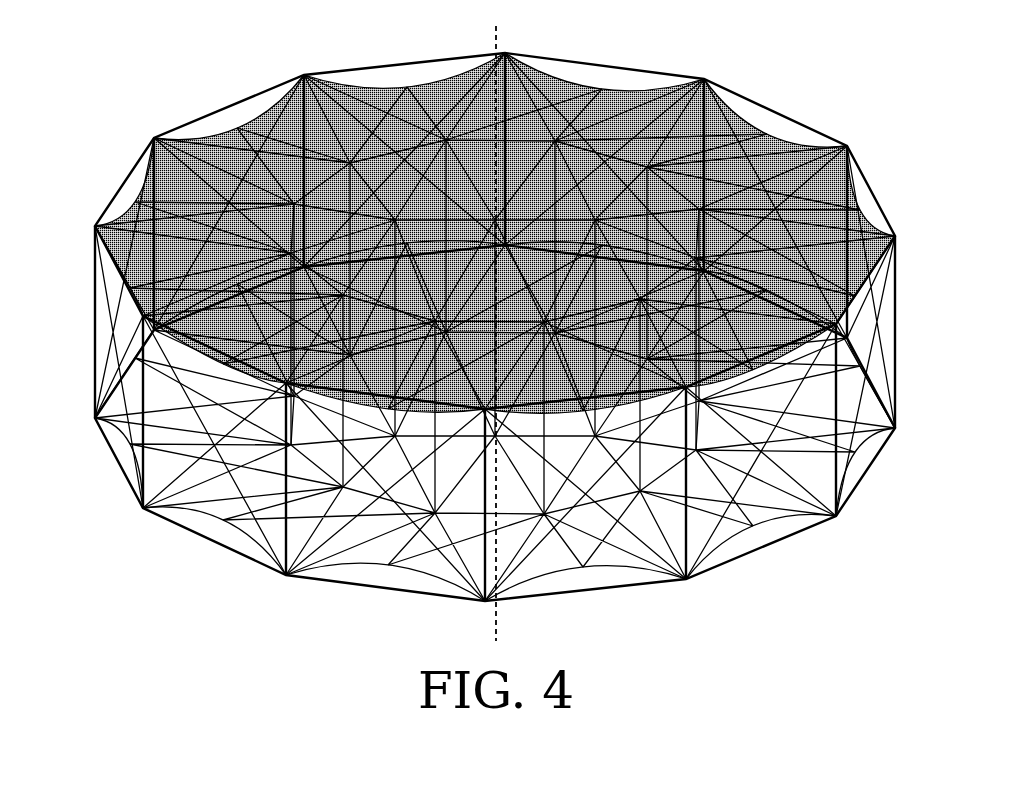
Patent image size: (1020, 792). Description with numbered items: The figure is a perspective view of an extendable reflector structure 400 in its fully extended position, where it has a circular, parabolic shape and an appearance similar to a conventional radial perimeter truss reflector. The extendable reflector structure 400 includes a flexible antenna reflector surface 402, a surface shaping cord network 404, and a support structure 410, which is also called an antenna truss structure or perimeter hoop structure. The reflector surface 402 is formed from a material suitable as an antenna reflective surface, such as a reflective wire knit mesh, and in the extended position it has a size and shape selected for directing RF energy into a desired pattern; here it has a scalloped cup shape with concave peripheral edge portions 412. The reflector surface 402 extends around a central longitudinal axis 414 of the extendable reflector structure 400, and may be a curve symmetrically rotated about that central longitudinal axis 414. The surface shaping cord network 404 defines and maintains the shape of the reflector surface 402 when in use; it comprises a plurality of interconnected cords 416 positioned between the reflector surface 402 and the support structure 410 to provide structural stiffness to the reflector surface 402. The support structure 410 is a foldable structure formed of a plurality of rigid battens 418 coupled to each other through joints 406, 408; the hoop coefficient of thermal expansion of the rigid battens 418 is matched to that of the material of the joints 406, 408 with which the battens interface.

The extendable reflector structure 400 is at (116, 68).
The flexible antenna reflector surface 402 is at (738, 115).
The surface shaping cord network 404 is at (755, 528).
The joint 406 is at (126, 312).
The joint 408 is at (136, 512).
The support structure 410 is at (90, 188).
The concave peripheral edge portion 412 is at (848, 184).
The central longitudinal axis 414 is at (498, 324).
The cord 416 is at (602, 548).
The rigid batten 418 is at (128, 466).